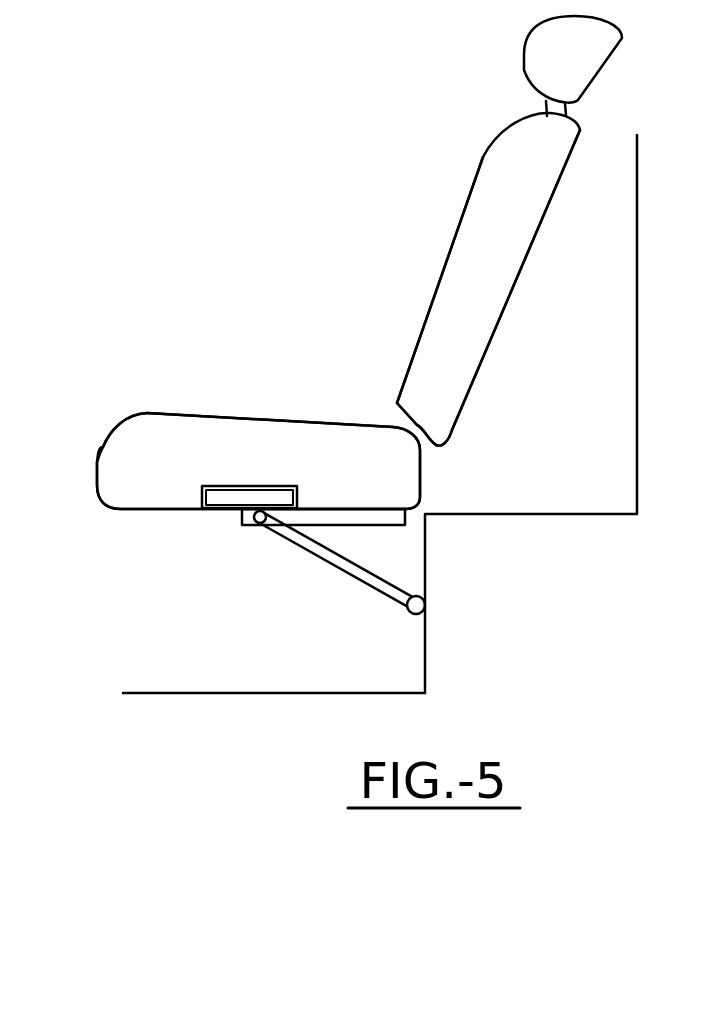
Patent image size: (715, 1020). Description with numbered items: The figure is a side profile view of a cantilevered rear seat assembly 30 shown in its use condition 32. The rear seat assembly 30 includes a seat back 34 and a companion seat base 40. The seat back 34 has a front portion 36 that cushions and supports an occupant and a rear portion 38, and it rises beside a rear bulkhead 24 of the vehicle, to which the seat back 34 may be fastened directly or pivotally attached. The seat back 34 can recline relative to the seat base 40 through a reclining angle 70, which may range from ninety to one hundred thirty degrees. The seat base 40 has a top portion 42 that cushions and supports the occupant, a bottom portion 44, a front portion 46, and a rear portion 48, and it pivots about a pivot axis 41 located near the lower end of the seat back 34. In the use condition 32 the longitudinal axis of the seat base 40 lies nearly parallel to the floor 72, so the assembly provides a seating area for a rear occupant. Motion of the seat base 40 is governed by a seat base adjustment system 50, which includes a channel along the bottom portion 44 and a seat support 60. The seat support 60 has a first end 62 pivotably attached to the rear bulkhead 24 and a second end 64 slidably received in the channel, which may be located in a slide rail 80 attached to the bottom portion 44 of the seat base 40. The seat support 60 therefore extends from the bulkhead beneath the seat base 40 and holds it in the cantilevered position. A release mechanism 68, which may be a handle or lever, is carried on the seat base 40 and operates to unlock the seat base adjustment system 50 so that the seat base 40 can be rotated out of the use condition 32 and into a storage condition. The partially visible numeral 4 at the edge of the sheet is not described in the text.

The vehicle (partial numeral) 4 is at (6, 158).
The rear bulkhead 24 is at (430, 549).
The rear seat assembly 30 is at (275, 238).
The use condition 32 is at (183, 236).
The seat back 34 is at (523, 308).
The front portion 36 is at (455, 230).
The rear portion 38 is at (545, 210).
The seat base 40 is at (100, 447).
The pivot axis 41 is at (428, 448).
The top portion 42 is at (178, 413).
The bottom portion 44 is at (132, 508).
The front portion 46 is at (107, 446).
The rear portion 48 is at (420, 482).
The seat base adjustment system 50 is at (373, 578).
The seat support 60 is at (330, 557).
The first end 62 is at (433, 607).
The second end 64 is at (258, 528).
The release mechanism 68 is at (234, 497).
The reclining angle 70 is at (420, 317).
The floor 72 is at (182, 693).
The slide rail 80 is at (367, 532).